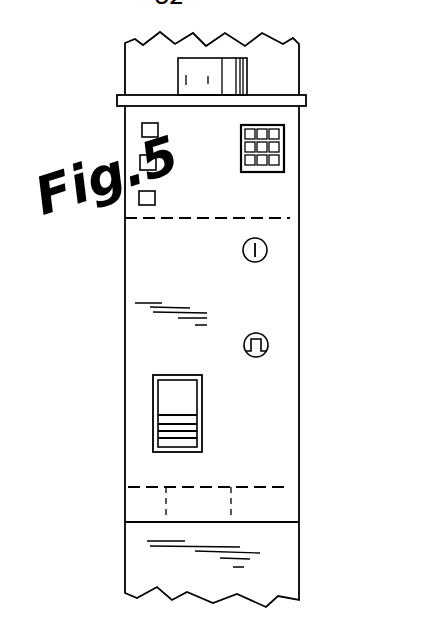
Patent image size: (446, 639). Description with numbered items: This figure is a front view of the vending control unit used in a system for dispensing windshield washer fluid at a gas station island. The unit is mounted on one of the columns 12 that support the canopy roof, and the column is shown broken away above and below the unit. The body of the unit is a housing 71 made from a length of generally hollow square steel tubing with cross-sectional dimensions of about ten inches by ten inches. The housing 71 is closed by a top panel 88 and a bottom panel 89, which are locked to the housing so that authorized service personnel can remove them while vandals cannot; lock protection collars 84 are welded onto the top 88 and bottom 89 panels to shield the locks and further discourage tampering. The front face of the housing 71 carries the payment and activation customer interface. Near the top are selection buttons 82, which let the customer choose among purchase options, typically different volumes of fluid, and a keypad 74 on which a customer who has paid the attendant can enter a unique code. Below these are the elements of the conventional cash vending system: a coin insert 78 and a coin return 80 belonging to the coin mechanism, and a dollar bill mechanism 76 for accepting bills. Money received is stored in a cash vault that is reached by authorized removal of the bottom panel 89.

The column 12 is at (298, 46).
The top panel 88 is at (306, 97).
The lock protection collar 84 is at (247, 70).
The selection buttons 82 is at (158, 130).
The keypad 74 is at (284, 148).
The coin insert 78 is at (243, 246).
The coin return 80 is at (250, 333).
The dollar bill mechanism 76 is at (201, 417).
The bottom panel 89 is at (280, 487).
The housing 71 is at (143, 253).